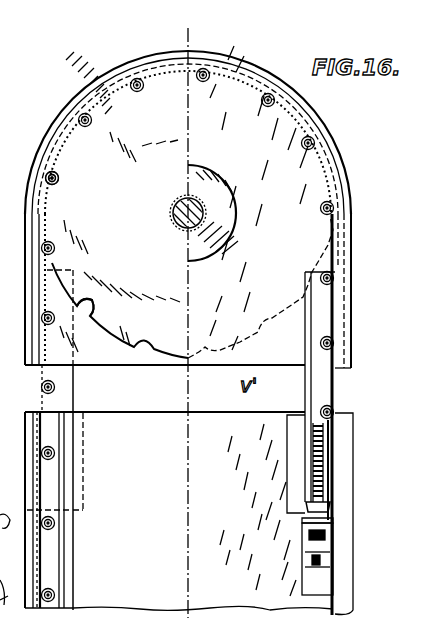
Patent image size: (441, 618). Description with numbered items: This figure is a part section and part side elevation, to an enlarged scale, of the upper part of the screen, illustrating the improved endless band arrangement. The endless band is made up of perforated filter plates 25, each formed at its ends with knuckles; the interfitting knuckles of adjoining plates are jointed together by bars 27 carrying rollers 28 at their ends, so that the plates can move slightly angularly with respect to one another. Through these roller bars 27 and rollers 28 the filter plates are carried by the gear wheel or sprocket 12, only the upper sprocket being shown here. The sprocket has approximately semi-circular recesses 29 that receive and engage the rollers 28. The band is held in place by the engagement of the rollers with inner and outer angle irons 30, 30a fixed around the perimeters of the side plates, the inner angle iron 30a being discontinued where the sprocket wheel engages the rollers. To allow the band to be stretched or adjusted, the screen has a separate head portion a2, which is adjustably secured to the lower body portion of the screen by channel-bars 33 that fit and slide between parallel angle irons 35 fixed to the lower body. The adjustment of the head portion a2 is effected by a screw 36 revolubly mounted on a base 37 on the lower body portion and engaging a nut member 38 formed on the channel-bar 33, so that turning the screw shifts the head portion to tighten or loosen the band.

The gear wheel or sprocket 12 is at (105, 327).
The perforated filter plate 25 is at (75, 97).
The bar 27 is at (59, 180).
The roller 28 is at (137, 94).
The semi-circular recess 29 is at (100, 306).
The outer angle iron 30 is at (37, 366).
The inner angle iron 30a is at (68, 555).
The channel-bar 33 is at (327, 383).
The parallel angle iron 35 is at (290, 430).
The screw 36 is at (327, 437).
The base 37 is at (320, 578).
The nut member 38 is at (334, 508).
The head portion a2 is at (368, 213).